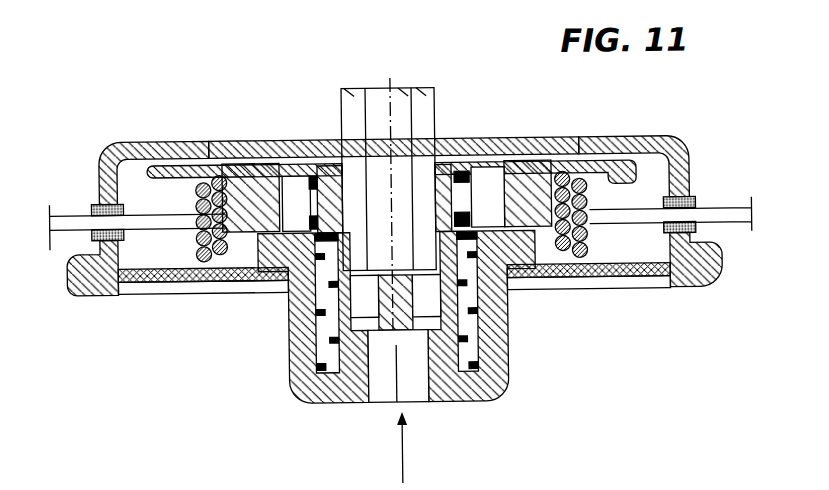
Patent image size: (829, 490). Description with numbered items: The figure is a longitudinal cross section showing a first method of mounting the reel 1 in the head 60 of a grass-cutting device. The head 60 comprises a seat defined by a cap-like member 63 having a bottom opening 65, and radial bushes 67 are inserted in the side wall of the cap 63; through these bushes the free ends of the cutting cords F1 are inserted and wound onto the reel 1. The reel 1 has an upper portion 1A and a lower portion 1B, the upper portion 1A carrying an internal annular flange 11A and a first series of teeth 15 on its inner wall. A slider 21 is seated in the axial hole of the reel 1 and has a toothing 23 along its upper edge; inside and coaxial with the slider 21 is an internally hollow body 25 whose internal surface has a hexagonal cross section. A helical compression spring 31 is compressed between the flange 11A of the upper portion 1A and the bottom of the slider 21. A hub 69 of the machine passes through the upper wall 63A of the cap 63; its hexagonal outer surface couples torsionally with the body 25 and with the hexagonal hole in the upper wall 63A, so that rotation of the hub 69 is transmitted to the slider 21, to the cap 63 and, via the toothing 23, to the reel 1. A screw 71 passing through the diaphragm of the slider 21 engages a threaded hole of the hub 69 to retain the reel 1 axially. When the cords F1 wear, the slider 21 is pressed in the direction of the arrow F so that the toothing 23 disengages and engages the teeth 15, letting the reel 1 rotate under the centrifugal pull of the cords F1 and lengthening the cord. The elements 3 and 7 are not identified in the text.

The reel 1 is at (589, 297).
The upper portion 1A is at (645, 163).
The lower portion 1B is at (653, 266).
The cap 3 is at (418, 172).
The base plate 7 is at (165, 282).
The internal annular flange 11A is at (274, 139).
The first series of teeth 15 is at (411, 134).
The slider 21 is at (293, 389).
The toothing 23 is at (510, 286).
The internally hollow body 25 is at (335, 304).
The helical compression spring 31 is at (455, 150).
The head 60 is at (674, 147).
The cap-like member 63 is at (687, 178).
The upper wall 63A is at (210, 138).
The bottom opening 65 is at (660, 283).
The radial bushes 67 is at (91, 203).
The hub 69 is at (353, 123).
The screw 71 is at (387, 352).
The arrow F is at (403, 460).
The cutting cords F1 is at (70, 228).